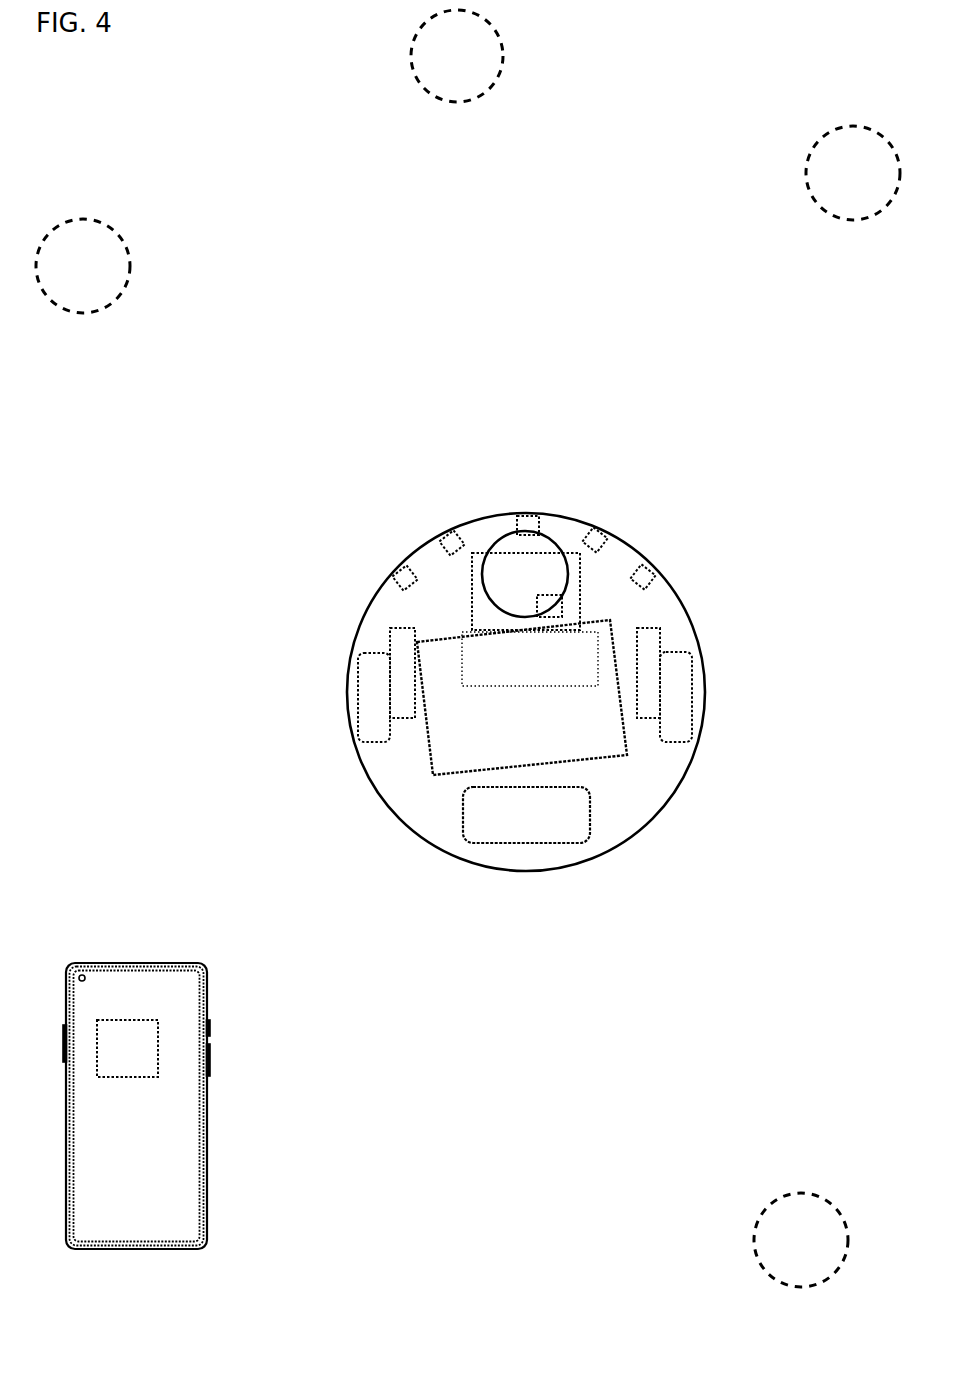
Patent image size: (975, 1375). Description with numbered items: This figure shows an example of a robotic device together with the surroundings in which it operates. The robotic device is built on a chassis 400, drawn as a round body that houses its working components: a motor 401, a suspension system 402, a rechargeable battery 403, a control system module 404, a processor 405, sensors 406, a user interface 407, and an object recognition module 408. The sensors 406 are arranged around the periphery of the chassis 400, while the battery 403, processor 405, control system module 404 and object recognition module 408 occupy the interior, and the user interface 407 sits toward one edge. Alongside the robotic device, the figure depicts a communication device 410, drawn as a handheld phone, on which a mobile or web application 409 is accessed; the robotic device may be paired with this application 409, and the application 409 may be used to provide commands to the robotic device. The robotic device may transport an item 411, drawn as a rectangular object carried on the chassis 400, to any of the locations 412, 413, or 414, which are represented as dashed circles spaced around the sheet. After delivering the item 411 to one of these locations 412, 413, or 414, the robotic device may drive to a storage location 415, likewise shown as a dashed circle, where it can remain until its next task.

The chassis 400 is at (653, 818).
The motor 401 is at (683, 723).
The suspension system 402 is at (653, 637).
The rechargeable battery 403 is at (518, 686).
The control system module 404 is at (472, 607).
The processor 405 is at (558, 611).
The sensors 406 is at (598, 531).
The user interface 407 is at (512, 832).
The object recognition module 408 is at (490, 538).
The mobile or web application 409 is at (117, 1020).
The communication device 410 is at (172, 962).
The item 411 is at (558, 765).
The location 412 is at (853, 173).
The location 413 is at (83, 266).
The location 414 is at (457, 56).
The storage location 415 is at (801, 1240).